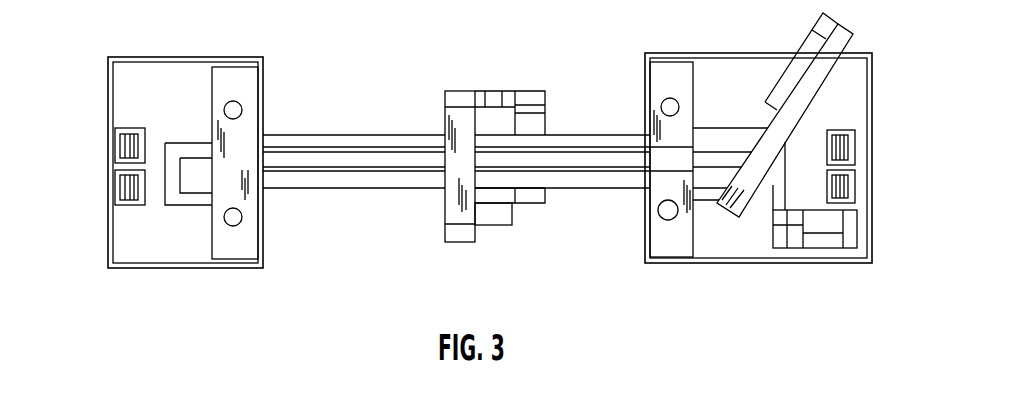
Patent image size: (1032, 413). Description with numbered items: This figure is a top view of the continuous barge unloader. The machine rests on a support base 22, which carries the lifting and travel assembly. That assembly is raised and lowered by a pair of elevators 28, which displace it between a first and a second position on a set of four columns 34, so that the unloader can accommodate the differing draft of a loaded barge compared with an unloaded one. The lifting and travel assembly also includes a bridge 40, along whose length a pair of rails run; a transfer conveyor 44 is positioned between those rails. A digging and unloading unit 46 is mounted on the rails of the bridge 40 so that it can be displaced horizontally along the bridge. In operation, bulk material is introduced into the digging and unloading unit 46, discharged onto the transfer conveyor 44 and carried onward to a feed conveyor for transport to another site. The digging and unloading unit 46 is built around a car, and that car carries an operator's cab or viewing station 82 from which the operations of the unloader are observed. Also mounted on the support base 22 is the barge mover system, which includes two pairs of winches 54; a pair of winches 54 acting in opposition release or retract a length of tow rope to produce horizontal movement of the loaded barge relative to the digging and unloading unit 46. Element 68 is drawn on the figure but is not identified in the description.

The support base 22 is at (175, 57).
The elevators 28 is at (223, 262).
The columns 34 is at (243, 108).
The bridge 40 is at (383, 134).
The transfer conveyor 44 is at (848, 50).
The digging and unloading unit 46 is at (499, 90).
The winches 54 is at (130, 135).
The latch block 68 is at (513, 215).
The operator's cab or viewing station 82 is at (457, 243).